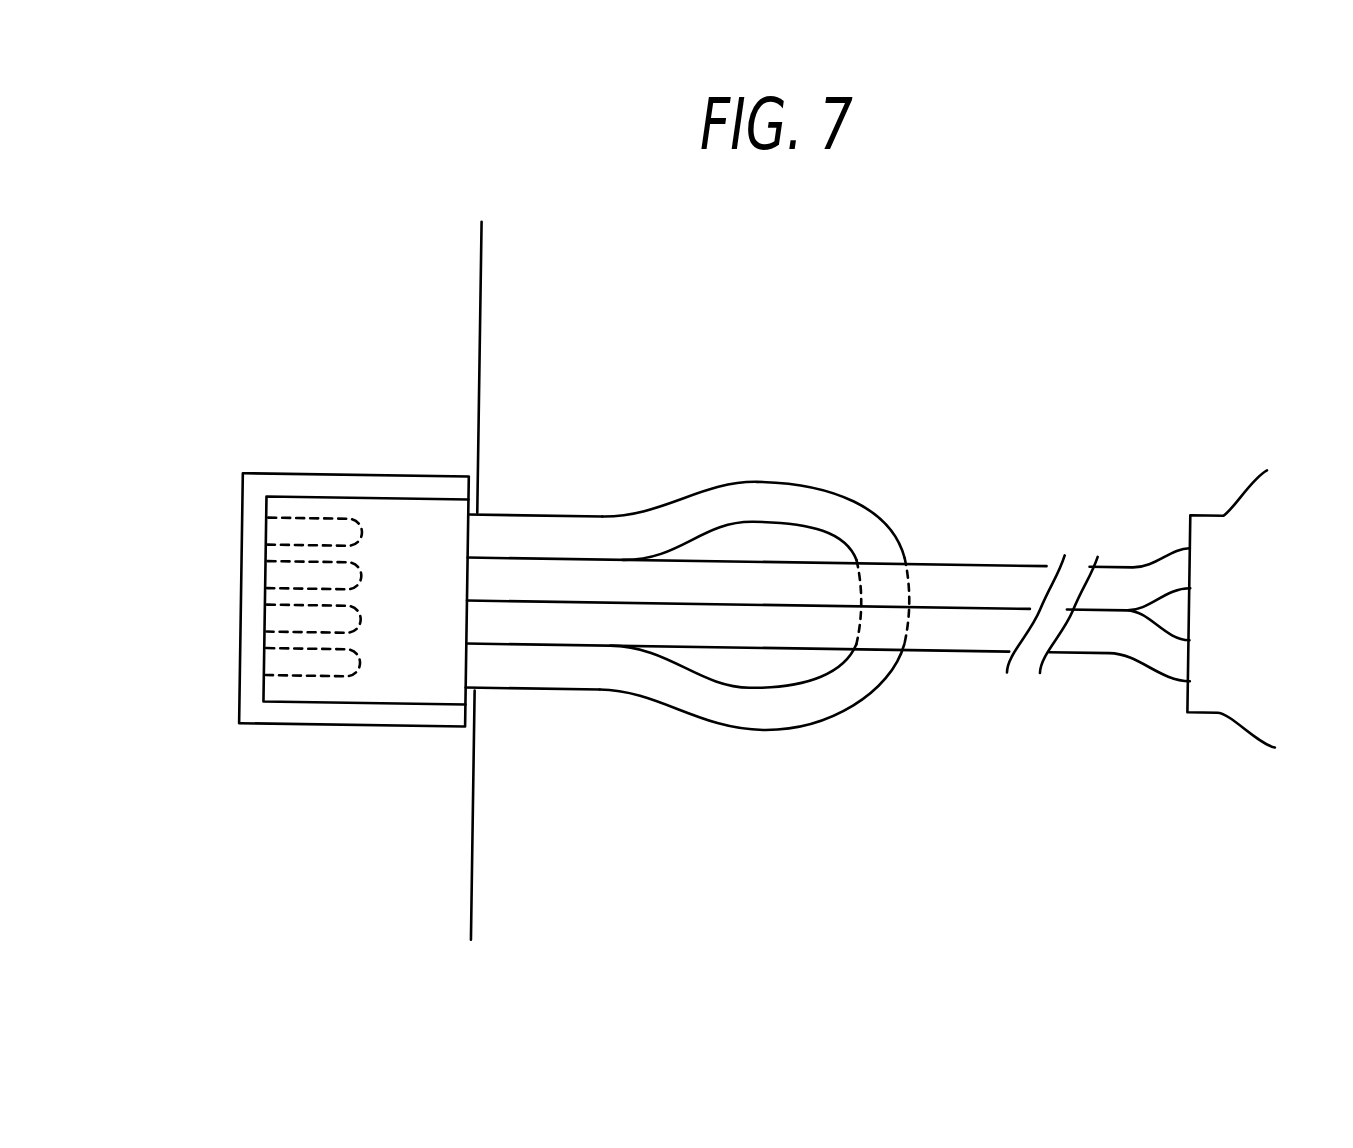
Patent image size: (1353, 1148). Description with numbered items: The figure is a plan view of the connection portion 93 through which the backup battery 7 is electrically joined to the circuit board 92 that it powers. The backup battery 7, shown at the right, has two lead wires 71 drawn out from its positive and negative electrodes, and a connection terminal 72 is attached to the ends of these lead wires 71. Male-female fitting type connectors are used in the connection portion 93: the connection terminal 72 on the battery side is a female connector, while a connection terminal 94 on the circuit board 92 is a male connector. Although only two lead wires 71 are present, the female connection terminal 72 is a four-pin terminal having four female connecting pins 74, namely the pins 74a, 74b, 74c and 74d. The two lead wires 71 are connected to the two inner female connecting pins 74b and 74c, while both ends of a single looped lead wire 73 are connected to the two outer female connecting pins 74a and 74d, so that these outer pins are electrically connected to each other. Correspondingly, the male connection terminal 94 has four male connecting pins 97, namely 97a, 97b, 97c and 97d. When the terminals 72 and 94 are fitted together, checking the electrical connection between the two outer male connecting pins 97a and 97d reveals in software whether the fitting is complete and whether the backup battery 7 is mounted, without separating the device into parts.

The backup battery 7 is at (1240, 702).
The lead wires 71 is at (1117, 589).
The connection terminal 72 is at (419, 537).
The looped lead wire 73 is at (859, 521).
The female connecting pins 74 is at (780, 601).
The outer female connecting pin 74a is at (464, 546).
The inner female connecting pin 74b is at (465, 584).
The inner female connecting pin 74c is at (465, 620).
The outer female connecting pin 74d is at (466, 662).
The circuit board 92 is at (467, 265).
The connection portion 93 is at (286, 519).
The connection terminal 94 is at (314, 493).
The male connecting pins 97 is at (232, 593).
The outer male connecting pin 97a is at (256, 537).
The inner male connecting pin 97b is at (256, 580).
The inner male connecting pin 97c is at (256, 623).
The outer male connecting pin 97d is at (263, 660).